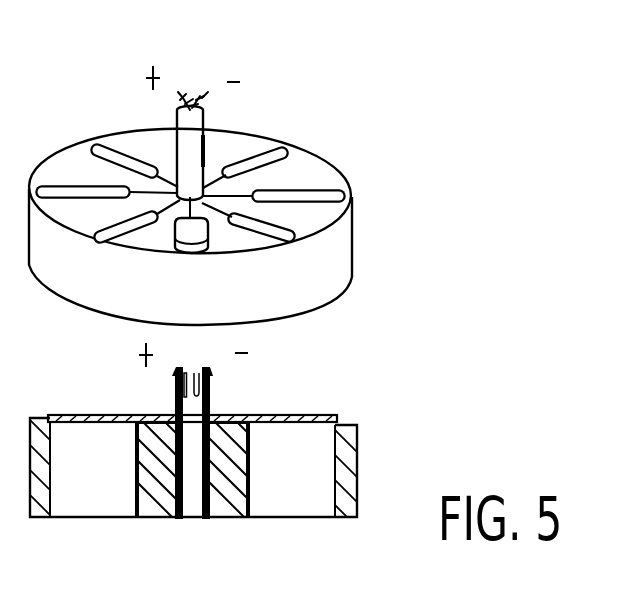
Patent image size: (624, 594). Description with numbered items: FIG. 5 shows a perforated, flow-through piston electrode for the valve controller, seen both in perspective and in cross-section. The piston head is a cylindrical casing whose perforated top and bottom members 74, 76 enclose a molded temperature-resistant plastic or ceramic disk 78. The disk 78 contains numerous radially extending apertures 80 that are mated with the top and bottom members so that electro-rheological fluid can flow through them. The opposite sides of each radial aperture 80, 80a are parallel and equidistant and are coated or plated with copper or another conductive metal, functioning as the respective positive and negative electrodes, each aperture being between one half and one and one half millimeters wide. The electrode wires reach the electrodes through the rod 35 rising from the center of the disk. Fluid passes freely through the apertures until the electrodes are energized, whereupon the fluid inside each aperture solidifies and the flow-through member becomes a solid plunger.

The rod 35 is at (177, 120).
The perforated top member 74 is at (307, 163).
The disk 78 is at (353, 237).
The perforated bottom member 76 is at (343, 293).
The radial aperture 80 is at (196, 250).
The radial aperture side 80a is at (184, 250).